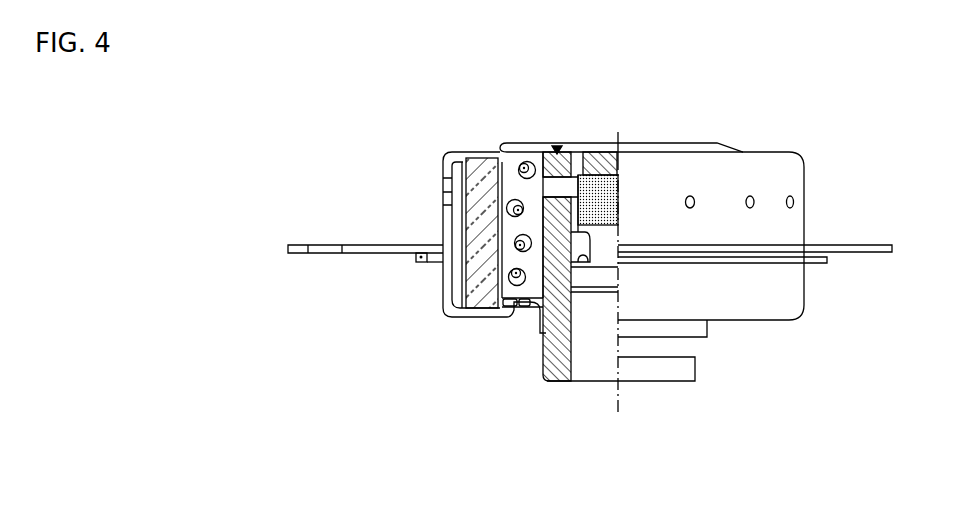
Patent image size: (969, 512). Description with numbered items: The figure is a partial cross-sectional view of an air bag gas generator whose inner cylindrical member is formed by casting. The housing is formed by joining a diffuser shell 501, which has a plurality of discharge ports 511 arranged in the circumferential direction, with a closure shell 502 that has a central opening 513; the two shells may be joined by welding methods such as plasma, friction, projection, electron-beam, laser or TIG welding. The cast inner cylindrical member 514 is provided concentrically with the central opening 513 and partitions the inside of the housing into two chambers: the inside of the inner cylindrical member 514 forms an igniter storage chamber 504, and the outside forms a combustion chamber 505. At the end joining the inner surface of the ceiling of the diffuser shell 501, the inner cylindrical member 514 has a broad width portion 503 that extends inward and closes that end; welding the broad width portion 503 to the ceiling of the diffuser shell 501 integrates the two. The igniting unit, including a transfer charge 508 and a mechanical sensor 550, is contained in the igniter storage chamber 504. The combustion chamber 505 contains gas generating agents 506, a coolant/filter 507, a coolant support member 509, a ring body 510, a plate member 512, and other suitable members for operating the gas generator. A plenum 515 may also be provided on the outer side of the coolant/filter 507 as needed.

The diffuser shell 501 is at (698, 165).
The closure shell 502 is at (745, 295).
The broad width portion 503 is at (598, 157).
The igniter storage chamber 504 is at (610, 203).
The combustion chamber 505 is at (515, 308).
The gas generating agents 506 is at (510, 200).
The coolant/filter 507 is at (457, 322).
The transfer charge 508 is at (588, 157).
The coolant support member 509 is at (522, 158).
The ring body 510 is at (440, 157).
The discharge ports 511 is at (794, 202).
The plate member 512 is at (535, 315).
The central opening 513 is at (513, 313).
The inner cylindrical member 514 is at (553, 382).
The plenum 515 is at (458, 227).
The mechanical sensor 550 is at (590, 350).